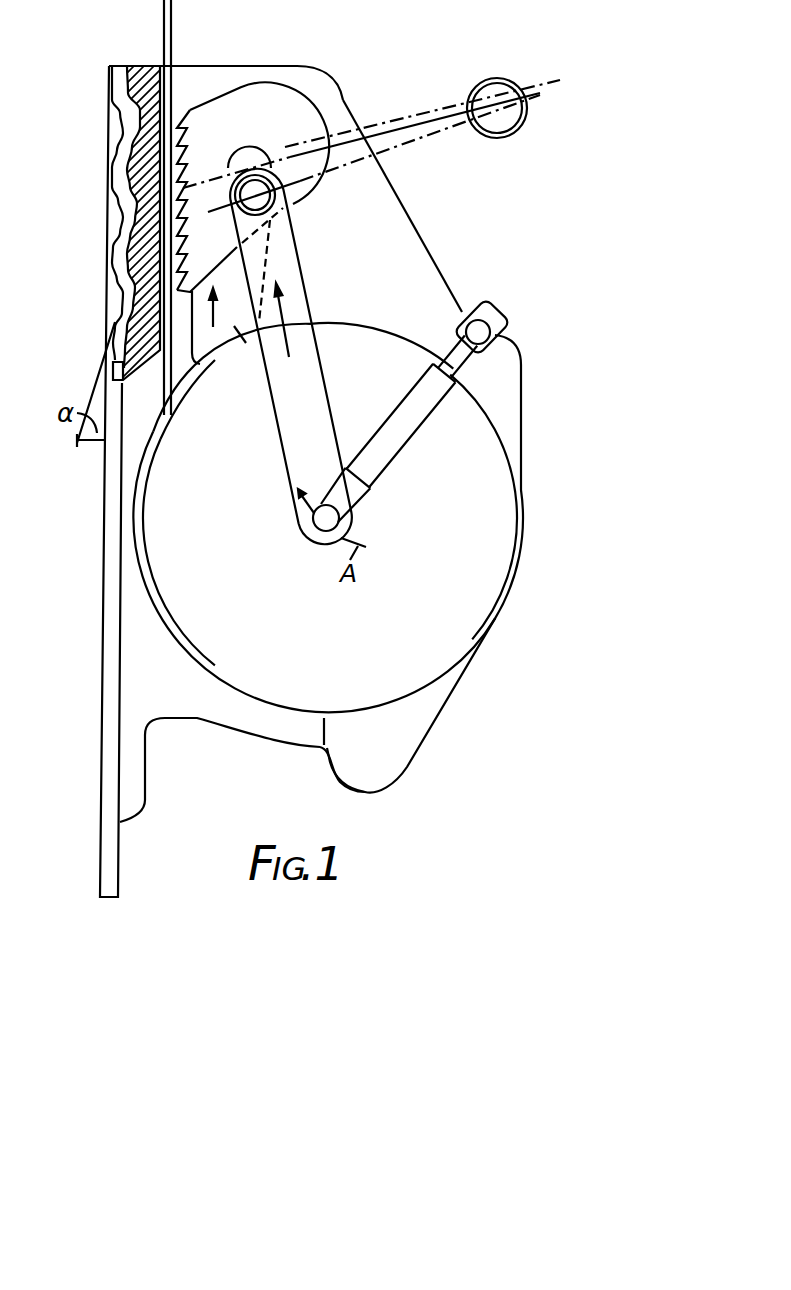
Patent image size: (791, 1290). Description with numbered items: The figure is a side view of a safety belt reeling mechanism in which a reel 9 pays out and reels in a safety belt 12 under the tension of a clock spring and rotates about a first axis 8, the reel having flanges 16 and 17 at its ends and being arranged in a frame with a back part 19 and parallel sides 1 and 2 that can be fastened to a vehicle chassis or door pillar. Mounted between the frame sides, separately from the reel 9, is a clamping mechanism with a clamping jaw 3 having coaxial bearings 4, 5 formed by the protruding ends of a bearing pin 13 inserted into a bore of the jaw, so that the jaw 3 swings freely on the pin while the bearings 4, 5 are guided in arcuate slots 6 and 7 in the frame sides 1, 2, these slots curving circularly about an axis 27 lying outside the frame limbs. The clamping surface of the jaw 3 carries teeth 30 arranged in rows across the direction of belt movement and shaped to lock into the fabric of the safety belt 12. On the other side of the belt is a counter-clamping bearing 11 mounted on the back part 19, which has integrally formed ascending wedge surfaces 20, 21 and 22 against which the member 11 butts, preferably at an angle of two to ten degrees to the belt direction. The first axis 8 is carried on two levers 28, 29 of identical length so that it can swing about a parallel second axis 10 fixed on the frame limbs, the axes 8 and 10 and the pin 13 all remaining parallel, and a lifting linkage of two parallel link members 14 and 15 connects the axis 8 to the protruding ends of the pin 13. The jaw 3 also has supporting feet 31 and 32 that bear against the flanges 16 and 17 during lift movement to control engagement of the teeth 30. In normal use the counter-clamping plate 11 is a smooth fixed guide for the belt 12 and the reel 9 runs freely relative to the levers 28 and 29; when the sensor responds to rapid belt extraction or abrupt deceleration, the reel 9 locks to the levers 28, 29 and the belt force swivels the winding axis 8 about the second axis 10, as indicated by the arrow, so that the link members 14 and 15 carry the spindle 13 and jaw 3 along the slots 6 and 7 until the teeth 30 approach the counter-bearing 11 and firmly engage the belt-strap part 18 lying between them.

The frame side 1 is at (420, 291).
The frame side 2 is at (429, 206).
The clamping jaw 3 is at (278, 97).
The coaxial bearing 4 is at (284, 204).
The coaxial bearing 5 is at (296, 202).
The arcuate slot 6 is at (267, 157).
The arcuate slot 7 is at (328, 124).
The first axis 8 is at (320, 523).
The reel 9 is at (493, 521).
The second axis 10 is at (498, 318).
The counter-clamping bearing 11 is at (147, 66).
The safety belt 12 is at (173, 7).
The bearing pin 13 is at (207, 294).
The link member 14 is at (297, 310).
The link member 15 is at (315, 356).
The reel flange 16 is at (187, 385).
The reel flange 17 is at (231, 381).
The belt-strap part 18 is at (165, 218).
The back part of the frame 19 is at (122, 182).
The ascending wedge surface 20 is at (128, 155).
The ascending wedge surface 21 is at (124, 251).
The ascending wedge surface 22 is at (126, 337).
The axis 27 is at (497, 108).
The lever 28 is at (403, 422).
The lever 29 is at (407, 429).
The teeth 30 is at (183, 192).
The supporting foot 31 is at (241, 343).
The supporting foot 32 is at (241, 366).